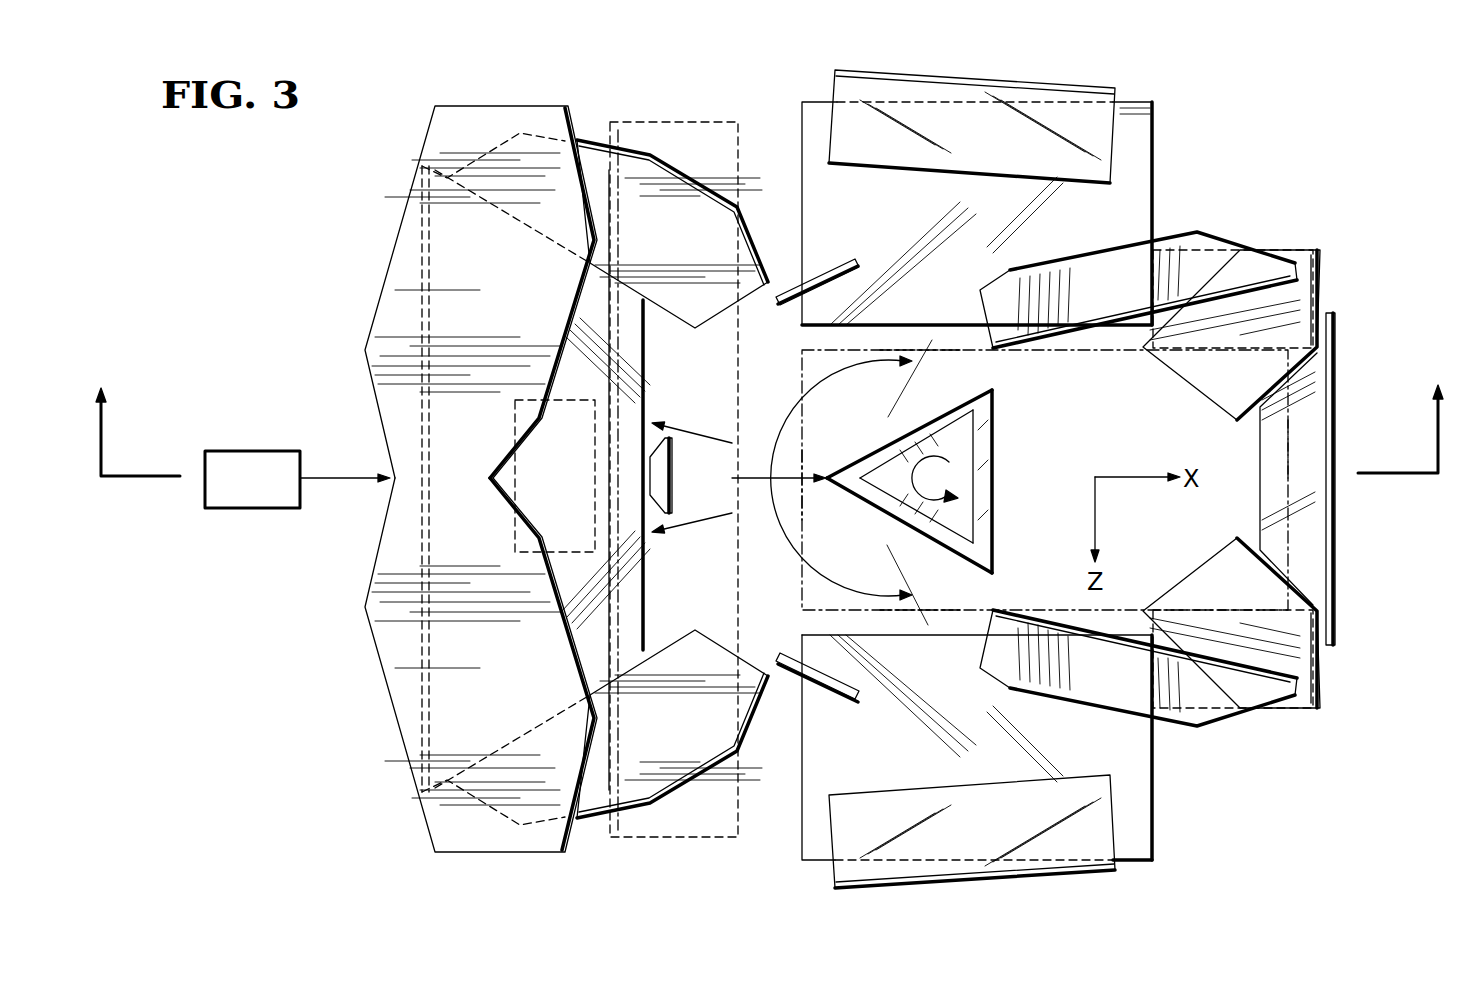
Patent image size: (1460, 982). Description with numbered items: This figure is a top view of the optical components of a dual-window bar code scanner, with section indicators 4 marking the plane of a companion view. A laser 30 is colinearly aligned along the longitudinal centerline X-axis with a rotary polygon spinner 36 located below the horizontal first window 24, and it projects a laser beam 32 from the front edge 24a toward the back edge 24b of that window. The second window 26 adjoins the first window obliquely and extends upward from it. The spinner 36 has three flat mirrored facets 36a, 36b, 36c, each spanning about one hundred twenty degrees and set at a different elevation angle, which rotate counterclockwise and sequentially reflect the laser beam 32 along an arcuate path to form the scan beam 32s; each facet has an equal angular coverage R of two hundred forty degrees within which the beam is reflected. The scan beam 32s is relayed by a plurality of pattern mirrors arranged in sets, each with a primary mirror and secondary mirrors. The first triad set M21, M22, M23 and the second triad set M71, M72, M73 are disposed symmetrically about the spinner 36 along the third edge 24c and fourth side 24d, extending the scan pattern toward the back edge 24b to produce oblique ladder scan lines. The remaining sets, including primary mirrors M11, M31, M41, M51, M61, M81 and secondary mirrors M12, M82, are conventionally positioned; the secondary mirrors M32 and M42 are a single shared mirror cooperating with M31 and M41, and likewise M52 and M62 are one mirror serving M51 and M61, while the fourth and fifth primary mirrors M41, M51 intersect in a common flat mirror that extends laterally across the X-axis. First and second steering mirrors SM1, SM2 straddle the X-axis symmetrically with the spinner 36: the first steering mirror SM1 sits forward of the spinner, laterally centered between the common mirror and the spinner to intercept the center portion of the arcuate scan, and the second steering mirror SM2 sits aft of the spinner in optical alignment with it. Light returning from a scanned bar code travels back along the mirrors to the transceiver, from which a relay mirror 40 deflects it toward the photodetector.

The section view direction indicator 4 is at (769, 417).
The laser 30 is at (248, 451).
The second window 26 is at (660, 120).
The relay mirror 40 is at (515, 412).
The first window 24 is at (1300, 562).
The front edge 24a is at (798, 583).
The back edge 24b is at (1290, 438).
The third edge 24c is at (853, 350).
The fourth side 24d is at (853, 610).
The laser beam 32 is at (755, 478).
The scan beam 32s is at (700, 438).
The spinner 36 is at (960, 468).
The first spinner facet 36a is at (900, 512).
The second spinner facet 36b is at (953, 415).
The third spinner facet 36c is at (987, 473).
The angular coverage R is at (825, 382).
The first steering mirror SM1 is at (673, 478).
The second steering mirror SM2 is at (1320, 513).
The primary pattern mirror M11 is at (917, 80).
The secondary pattern mirror M12 is at (1155, 137).
The primary pattern mirror M21 is at (833, 263).
The secondary pattern mirror M22 is at (1195, 727).
The secondary pattern mirror M23 is at (1318, 685).
The primary pattern mirror M31 is at (589, 137).
The secondary pattern mirror M32 is at (445, 292).
The secondary pattern mirror M42 is at (397, 237).
The fourth primary mirror M41 is at (422, 309).
The fifth primary mirror M51 is at (422, 655).
The secondary pattern mirror M52 is at (451, 665).
The secondary pattern mirror M62 is at (410, 762).
The primary pattern mirror M61 is at (602, 820).
The primary pattern mirror M71 is at (832, 690).
The secondary pattern mirror M72 is at (1197, 232).
The secondary pattern mirror M73 is at (1317, 287).
The primary pattern mirror M81 is at (893, 883).
The secondary pattern mirror M82 is at (1153, 840).